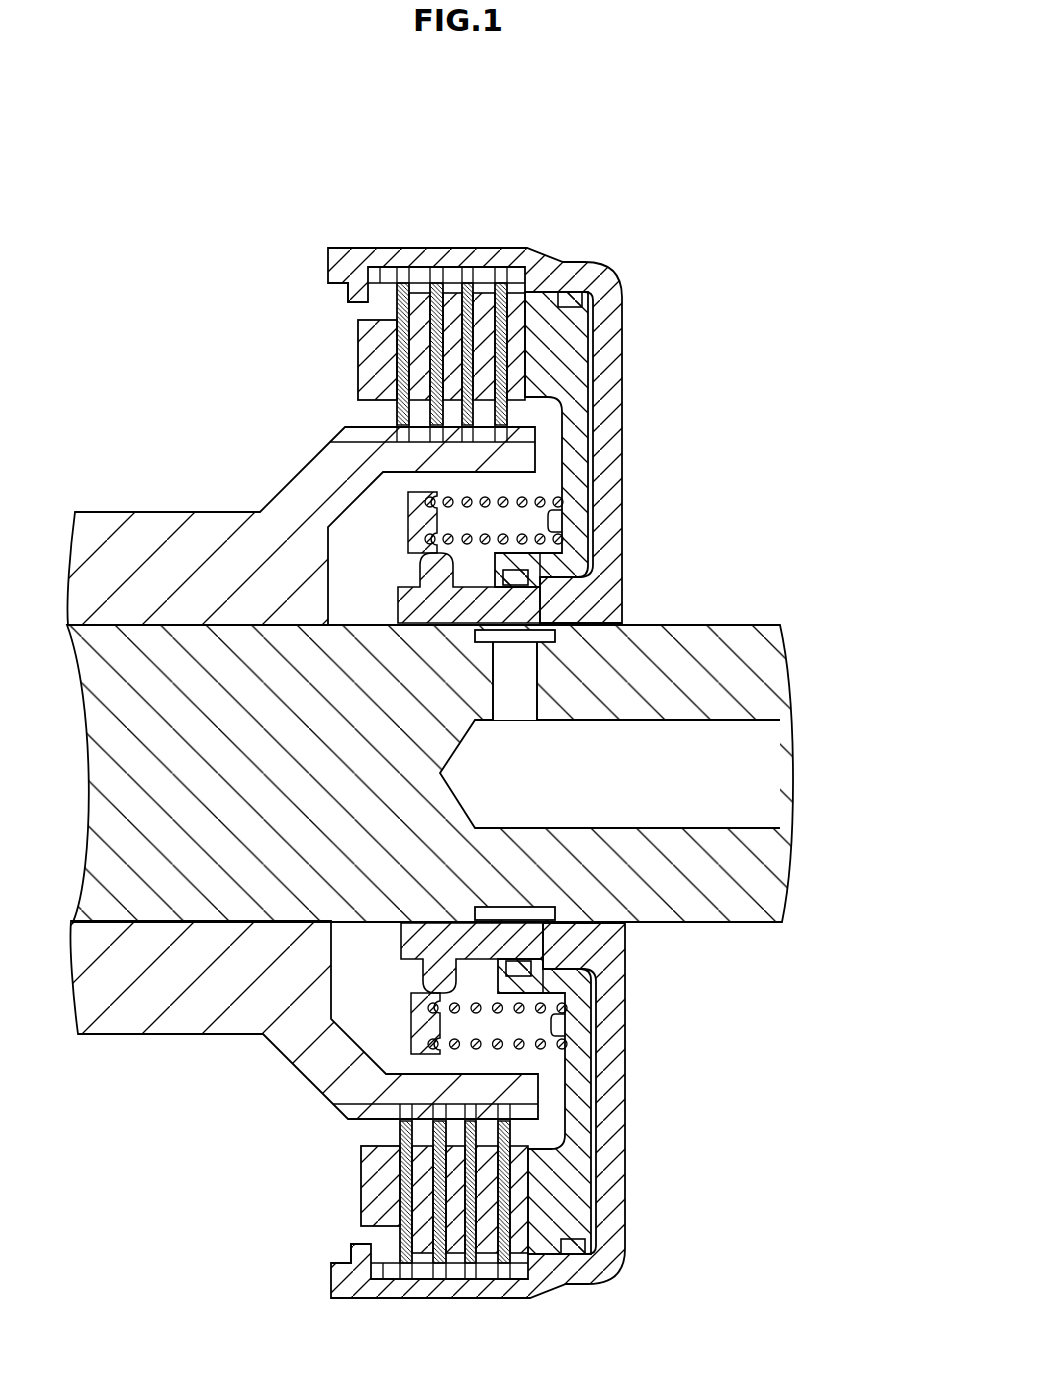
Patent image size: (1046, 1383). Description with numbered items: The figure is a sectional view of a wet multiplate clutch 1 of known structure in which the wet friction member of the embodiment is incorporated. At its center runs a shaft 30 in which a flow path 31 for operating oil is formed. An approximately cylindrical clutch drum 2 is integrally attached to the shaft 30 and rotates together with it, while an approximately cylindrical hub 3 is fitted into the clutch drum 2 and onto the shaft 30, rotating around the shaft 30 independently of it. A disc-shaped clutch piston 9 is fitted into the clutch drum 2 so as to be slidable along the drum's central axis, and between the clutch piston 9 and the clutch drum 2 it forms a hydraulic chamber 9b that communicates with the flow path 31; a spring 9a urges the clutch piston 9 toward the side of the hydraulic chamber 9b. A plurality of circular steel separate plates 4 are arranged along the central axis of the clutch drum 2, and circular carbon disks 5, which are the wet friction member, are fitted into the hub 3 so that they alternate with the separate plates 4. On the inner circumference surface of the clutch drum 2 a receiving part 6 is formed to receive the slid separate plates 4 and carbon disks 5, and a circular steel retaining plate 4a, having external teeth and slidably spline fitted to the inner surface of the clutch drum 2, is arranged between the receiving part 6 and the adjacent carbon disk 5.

The wet multiplate clutch 1 is at (486, 702).
The clutch drum 2 is at (622, 296).
The hub 3 is at (307, 483).
The separate plate 4 is at (410, 408).
The retaining plate 4a is at (357, 353).
The carbon disk 5 is at (402, 298).
The receiving part 6 is at (350, 300).
The clutch piston 9 is at (582, 390).
The spring 9a is at (522, 500).
The hydraulic chamber 9b is at (593, 506).
The shaft 30 is at (458, 737).
The flow path 31 is at (523, 667).